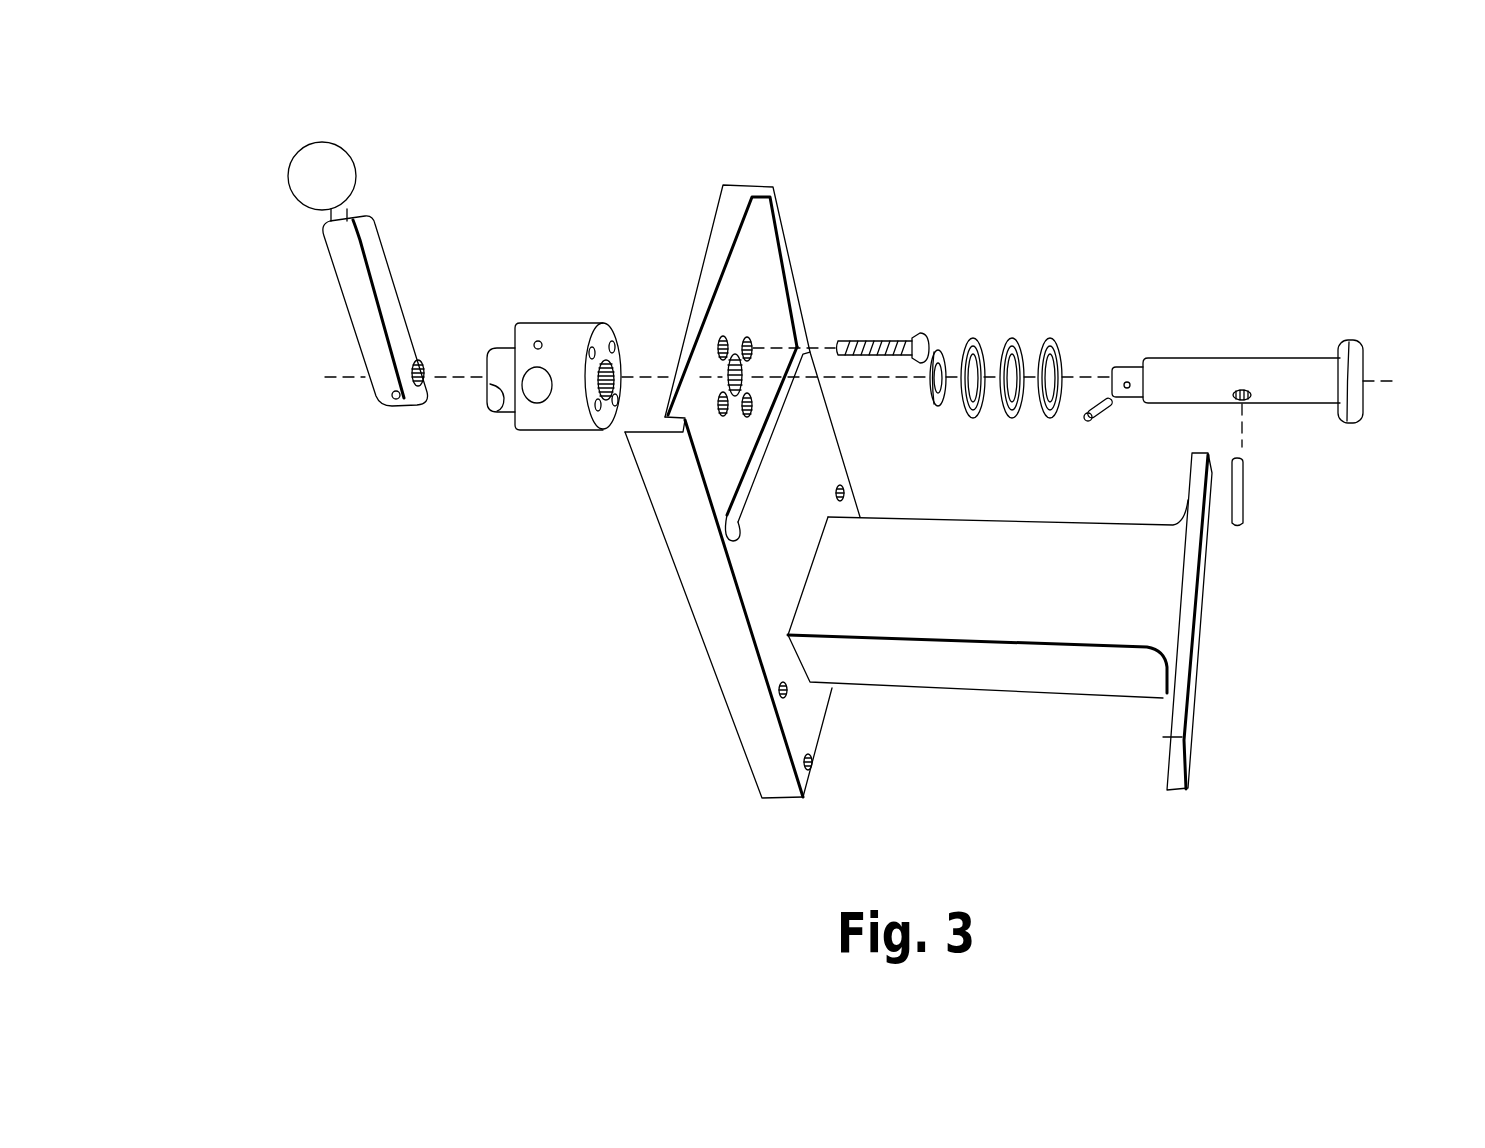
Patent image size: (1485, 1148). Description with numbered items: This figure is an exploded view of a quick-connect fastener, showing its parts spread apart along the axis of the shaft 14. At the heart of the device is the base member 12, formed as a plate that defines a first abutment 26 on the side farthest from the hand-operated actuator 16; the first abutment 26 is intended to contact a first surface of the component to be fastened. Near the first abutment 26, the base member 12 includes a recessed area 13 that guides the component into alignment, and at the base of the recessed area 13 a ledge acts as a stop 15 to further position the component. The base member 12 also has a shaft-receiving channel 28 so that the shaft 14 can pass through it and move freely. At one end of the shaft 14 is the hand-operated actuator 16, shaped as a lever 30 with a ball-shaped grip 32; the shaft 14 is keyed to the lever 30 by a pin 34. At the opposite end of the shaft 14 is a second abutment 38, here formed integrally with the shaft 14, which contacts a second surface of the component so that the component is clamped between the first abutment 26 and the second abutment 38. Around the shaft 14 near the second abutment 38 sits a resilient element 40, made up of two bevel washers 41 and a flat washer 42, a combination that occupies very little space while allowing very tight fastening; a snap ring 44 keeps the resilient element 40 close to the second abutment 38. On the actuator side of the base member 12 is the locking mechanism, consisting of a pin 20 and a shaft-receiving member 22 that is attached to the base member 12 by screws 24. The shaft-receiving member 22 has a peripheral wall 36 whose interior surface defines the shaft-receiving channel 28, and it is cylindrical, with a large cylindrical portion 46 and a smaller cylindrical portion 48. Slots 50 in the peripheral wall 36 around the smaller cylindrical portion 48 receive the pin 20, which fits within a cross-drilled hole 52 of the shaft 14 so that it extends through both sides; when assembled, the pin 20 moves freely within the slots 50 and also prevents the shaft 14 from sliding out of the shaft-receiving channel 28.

The base member 12 is at (762, 600).
The recessed area 13 is at (706, 447).
The shaft 14 is at (1200, 373).
The stop 15 is at (752, 460).
The hand-operated actuator 16 is at (349, 342).
The pin 20 is at (1245, 497).
The shaft-receiving member 22 is at (560, 370).
The screws 24 is at (876, 340).
The first abutment 26 is at (745, 268).
The shaft-receiving channel 28 is at (750, 350).
The lever 30 is at (347, 287).
The ball-shaped grip 32 is at (307, 177).
The pin 34 is at (1107, 415).
The peripheral wall 36 is at (545, 325).
The second abutment 38 is at (1342, 345).
The resilient element 40 is at (1003, 390).
The bevel washers 41 is at (1046, 422).
The washer 42 is at (970, 422).
The snap ring 44 is at (937, 338).
The large cylindrical portion 46 is at (568, 332).
The smaller cylindrical portion 48 is at (503, 357).
The slot 50 is at (485, 402).
The cross-drilled hole 52 is at (1247, 392).